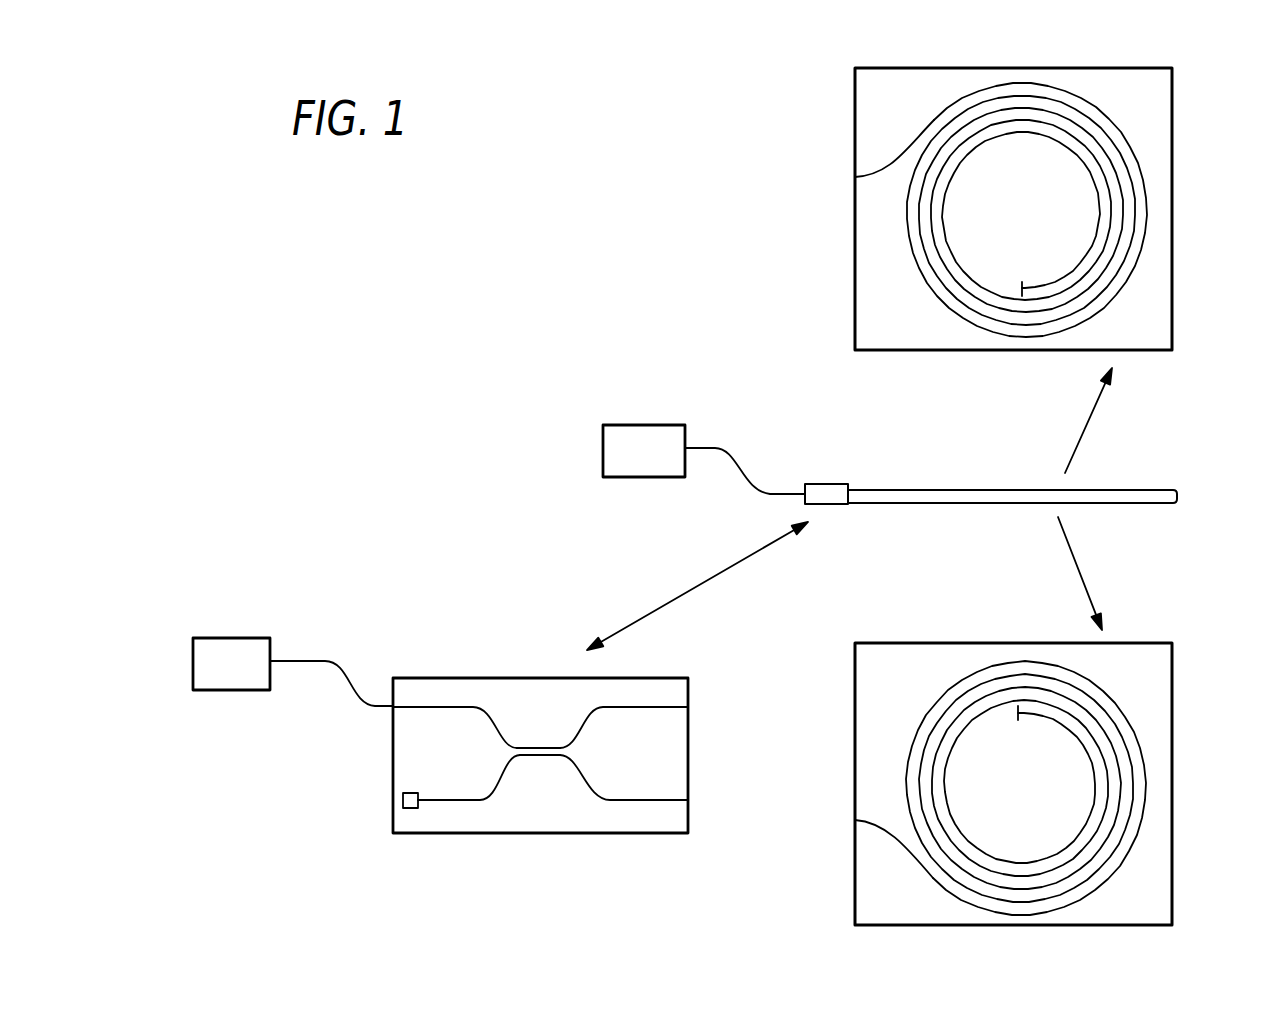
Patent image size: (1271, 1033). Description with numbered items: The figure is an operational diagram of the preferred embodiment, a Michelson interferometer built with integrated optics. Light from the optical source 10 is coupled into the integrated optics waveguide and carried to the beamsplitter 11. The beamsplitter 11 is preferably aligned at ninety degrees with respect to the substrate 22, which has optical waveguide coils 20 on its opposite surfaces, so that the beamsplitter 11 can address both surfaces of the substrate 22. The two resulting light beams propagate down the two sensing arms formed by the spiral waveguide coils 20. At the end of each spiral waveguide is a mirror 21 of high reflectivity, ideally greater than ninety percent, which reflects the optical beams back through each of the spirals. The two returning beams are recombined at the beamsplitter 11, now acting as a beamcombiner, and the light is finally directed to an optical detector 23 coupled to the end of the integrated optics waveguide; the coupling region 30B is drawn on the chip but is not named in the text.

The optical source 10 is at (648, 425).
The beamsplitter 11 is at (635, 835).
The optical waveguide coils 20 is at (932, 118).
The mirror 21 is at (1033, 269).
The substrate 22 is at (1172, 116).
The optical detector 23 is at (403, 803).
The directional coupler 30B is at (542, 758).